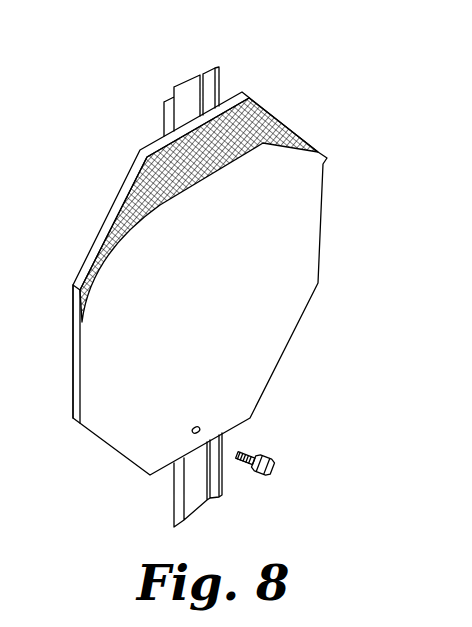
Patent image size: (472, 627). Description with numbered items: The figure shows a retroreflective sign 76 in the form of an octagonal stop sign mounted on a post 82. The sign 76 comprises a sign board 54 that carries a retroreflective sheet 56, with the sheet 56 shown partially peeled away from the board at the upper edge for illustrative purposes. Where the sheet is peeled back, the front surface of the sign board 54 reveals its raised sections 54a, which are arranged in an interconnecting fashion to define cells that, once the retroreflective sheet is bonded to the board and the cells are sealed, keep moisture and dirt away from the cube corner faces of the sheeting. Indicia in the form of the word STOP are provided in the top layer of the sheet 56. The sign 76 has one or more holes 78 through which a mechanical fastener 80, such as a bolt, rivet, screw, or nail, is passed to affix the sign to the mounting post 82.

The sign board 54 is at (127, 183).
The raised sections 54a is at (263, 107).
The retroreflective sheet 56 is at (323, 172).
The sign 76 is at (360, 105).
The holes 78 is at (200, 428).
The mechanical fastener 80 is at (270, 473).
The post 82 is at (178, 83).